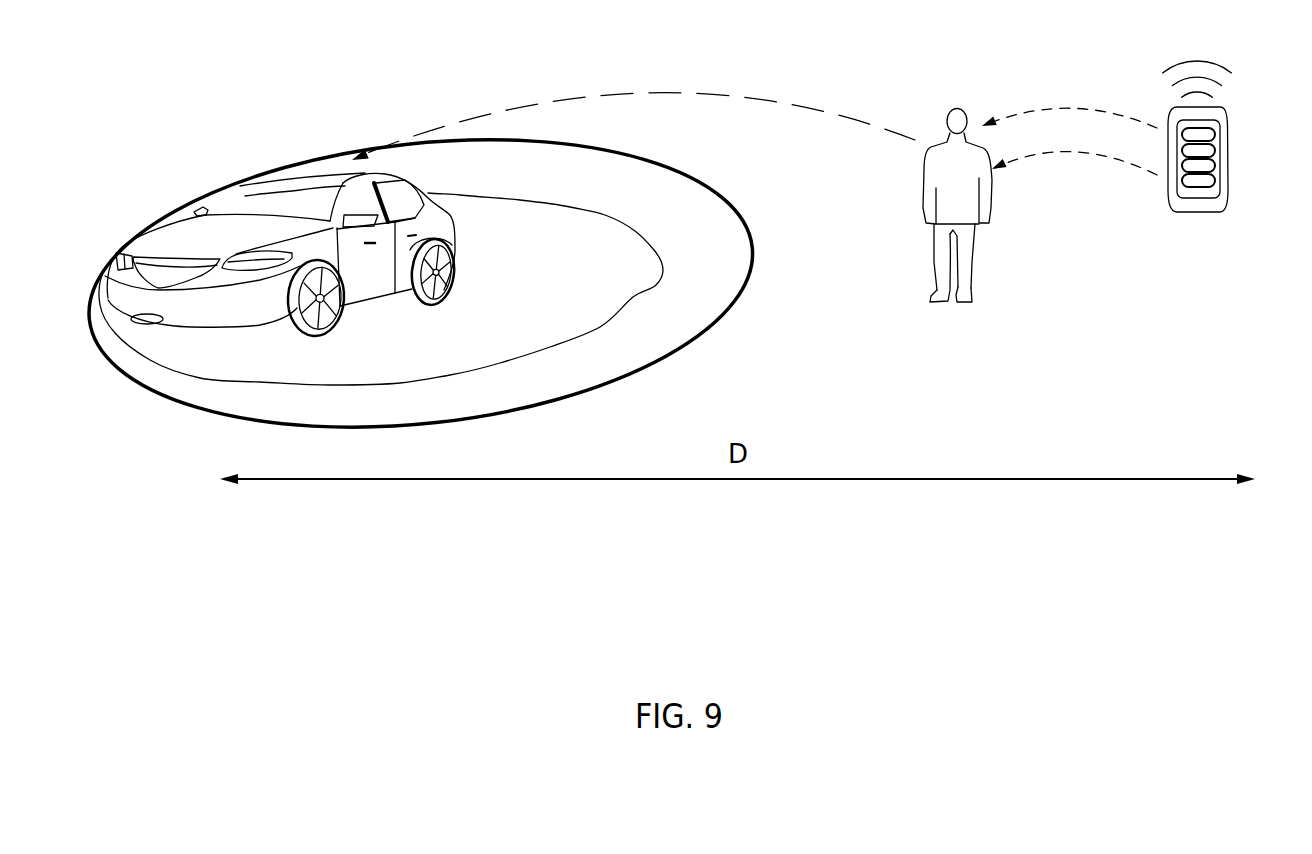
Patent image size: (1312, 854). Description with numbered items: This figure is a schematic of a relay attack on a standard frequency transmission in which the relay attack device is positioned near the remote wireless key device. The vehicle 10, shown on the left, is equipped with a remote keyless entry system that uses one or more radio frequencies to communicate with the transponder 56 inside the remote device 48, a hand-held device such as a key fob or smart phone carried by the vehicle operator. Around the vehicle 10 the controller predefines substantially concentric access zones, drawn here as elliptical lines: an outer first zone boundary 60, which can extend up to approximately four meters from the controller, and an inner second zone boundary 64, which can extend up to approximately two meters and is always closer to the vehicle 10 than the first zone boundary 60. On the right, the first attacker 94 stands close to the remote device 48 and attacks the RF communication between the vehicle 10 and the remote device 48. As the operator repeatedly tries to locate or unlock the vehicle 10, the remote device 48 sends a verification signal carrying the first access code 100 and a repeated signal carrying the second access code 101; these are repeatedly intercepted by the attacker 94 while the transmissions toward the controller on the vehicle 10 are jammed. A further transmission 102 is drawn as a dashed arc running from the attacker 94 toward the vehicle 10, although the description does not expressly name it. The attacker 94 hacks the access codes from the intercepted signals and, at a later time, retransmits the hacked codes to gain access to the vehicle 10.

The vehicle 10 is at (176, 237).
The first zone boundary 60 is at (176, 404).
The second zone boundary 64 is at (200, 379).
The first attacker 94 is at (969, 256).
The remote device 48 is at (1222, 179).
The transponder 56 is at (1222, 110).
The first access code 100 is at (1052, 105).
The second access code 101 is at (1080, 154).
The signal from fob to vehicle 102 is at (617, 93).